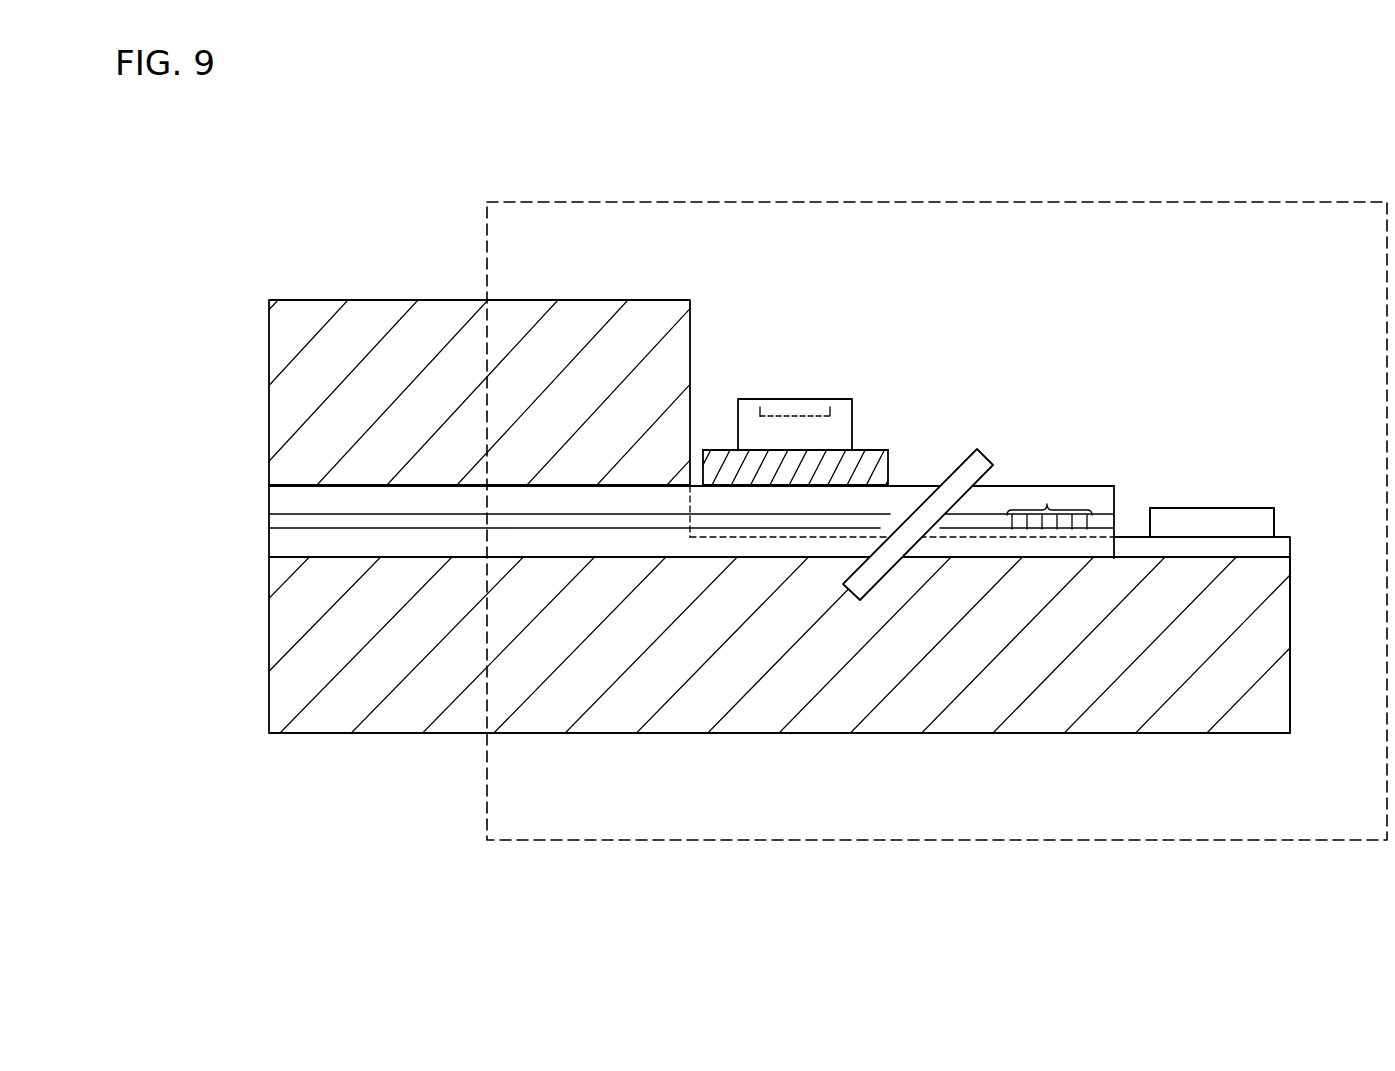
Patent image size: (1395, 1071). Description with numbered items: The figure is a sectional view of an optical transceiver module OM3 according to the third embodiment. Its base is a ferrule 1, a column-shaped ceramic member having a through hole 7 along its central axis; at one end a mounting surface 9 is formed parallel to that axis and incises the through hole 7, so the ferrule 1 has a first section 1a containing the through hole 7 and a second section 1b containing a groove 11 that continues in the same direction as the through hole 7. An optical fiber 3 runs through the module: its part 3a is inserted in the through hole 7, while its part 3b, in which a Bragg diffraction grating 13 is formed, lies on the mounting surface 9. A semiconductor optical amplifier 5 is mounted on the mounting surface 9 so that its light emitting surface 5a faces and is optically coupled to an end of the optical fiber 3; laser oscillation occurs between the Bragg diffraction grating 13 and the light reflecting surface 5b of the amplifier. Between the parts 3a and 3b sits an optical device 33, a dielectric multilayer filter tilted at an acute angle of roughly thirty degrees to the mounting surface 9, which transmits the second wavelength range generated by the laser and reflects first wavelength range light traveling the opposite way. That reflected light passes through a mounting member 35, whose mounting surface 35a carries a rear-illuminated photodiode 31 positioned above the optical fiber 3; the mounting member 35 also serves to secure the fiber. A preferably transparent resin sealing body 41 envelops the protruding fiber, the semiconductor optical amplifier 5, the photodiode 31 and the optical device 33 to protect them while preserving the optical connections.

The ferrule 1 is at (256, 663).
The first section 1a is at (430, 710).
The second section 1b is at (1023, 710).
The optical fiber 3 is at (691, 660).
The part of the optical fiber 3a is at (783, 545).
The part of the optical fiber 3b is at (967, 548).
The semiconductor optical amplifier 5 is at (1233, 507).
The light emitting surface 5a is at (1142, 522).
The light reflecting surface 5b is at (1275, 518).
The through hole 7 is at (552, 556).
The mounting surface 9 is at (1128, 533).
The groove 11 is at (1280, 542).
The Bragg diffraction grating 13 is at (1047, 502).
The photodiode 31 is at (795, 398).
The optical device 33 is at (993, 457).
The mounting member 35 is at (890, 465).
The mounting surface 35a is at (872, 447).
The resin sealing body 41 is at (1140, 842).
The optical transceiver module OM3 is at (937, 504).